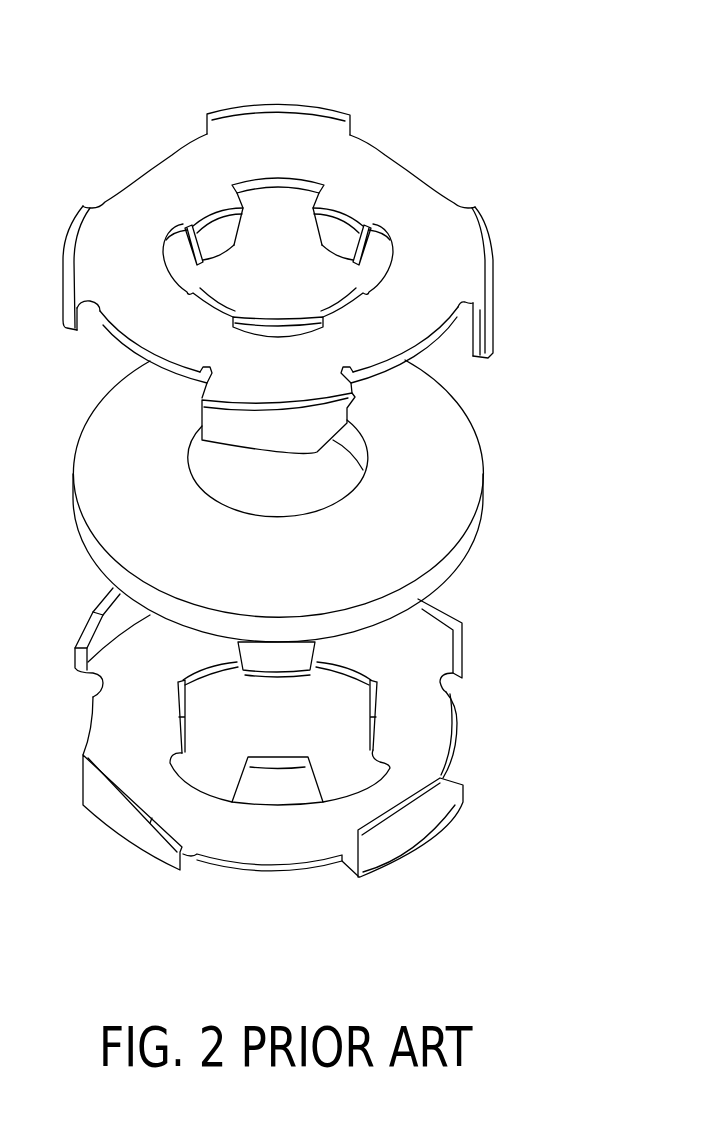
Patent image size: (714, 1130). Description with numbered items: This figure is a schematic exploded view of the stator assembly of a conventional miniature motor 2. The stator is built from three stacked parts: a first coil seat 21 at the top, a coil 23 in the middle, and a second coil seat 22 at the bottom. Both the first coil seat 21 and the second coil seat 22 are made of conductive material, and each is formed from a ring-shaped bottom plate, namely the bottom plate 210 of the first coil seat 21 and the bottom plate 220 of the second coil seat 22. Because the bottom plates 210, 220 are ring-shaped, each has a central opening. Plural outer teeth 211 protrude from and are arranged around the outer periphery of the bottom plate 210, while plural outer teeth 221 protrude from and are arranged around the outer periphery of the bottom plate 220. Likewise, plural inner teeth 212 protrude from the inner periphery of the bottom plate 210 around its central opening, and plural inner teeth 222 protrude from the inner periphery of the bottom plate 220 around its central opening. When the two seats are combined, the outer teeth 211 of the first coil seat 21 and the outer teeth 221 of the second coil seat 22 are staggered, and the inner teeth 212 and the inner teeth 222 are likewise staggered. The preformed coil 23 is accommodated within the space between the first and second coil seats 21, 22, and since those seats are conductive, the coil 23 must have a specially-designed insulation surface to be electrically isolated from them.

The miniature motor 2 is at (566, 22).
The first coil seat 21 is at (461, 130).
The bottom plate 210 is at (468, 252).
The outer teeth 211 is at (485, 323).
The inner teeth 212 is at (335, 230).
The coil 23 is at (463, 453).
The second coil seat 22 is at (478, 707).
The bottom plate 220 is at (430, 757).
The outer teeth 221 is at (410, 830).
The inner teeth 222 is at (272, 790).